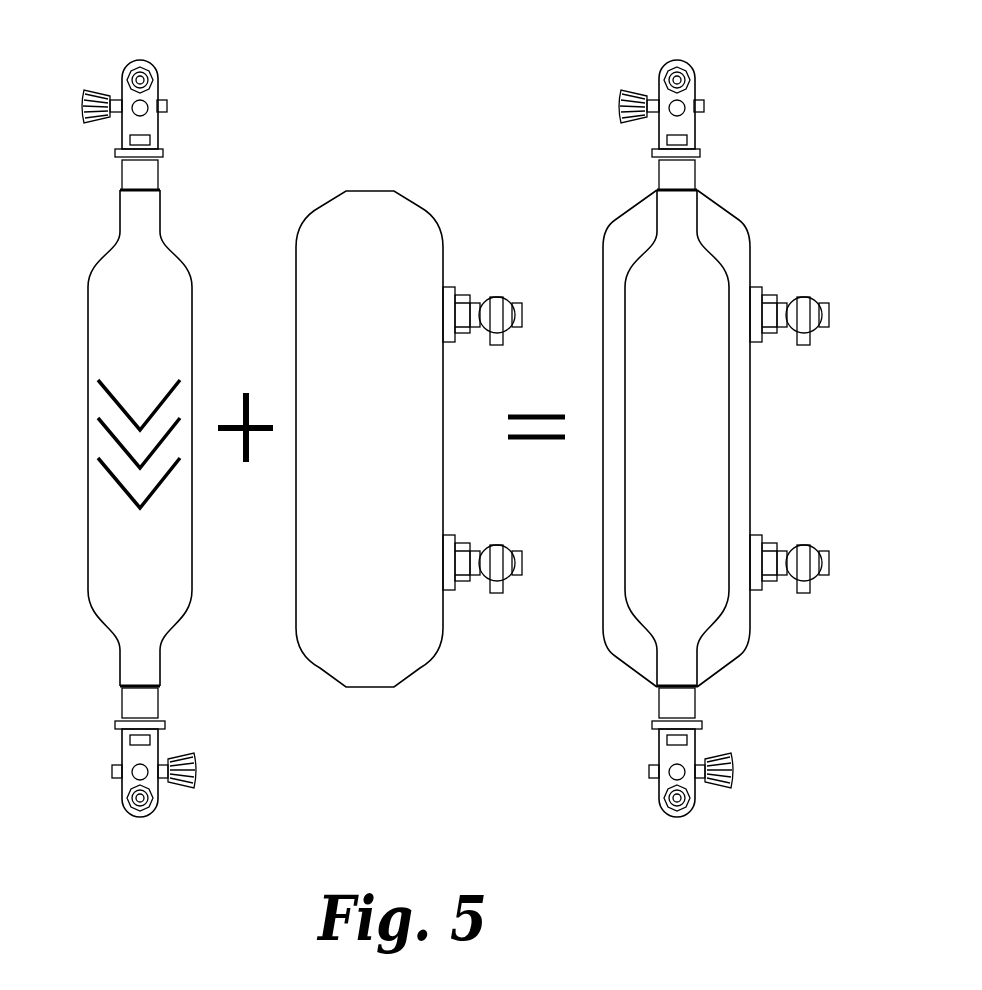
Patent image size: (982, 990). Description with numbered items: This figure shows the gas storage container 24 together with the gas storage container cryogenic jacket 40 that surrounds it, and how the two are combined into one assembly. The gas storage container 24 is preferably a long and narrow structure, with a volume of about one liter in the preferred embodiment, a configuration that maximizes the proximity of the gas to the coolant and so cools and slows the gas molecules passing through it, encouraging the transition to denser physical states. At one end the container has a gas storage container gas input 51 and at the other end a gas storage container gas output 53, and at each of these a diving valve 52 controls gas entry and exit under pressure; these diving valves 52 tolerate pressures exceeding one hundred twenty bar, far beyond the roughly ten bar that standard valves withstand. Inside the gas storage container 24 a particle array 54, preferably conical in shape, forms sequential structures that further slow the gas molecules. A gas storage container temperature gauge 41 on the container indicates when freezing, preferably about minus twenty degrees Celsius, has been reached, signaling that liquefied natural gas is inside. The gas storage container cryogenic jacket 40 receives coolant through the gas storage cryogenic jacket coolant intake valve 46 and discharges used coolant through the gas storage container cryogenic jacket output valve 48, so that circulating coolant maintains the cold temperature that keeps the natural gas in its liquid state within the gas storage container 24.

The gas storage container 24 is at (118, 563).
The gas storage container cryogenic jacket 40 is at (336, 233).
The gas storage container temperature gauge 41 is at (137, 773).
The gas storage cryogenic jacket coolant intake valve 46 is at (522, 563).
The gas storage container cryogenic jacket output valve 48 is at (522, 313).
The gas storage container gas input 51 is at (112, 770).
The diving valves 52 is at (146, 60).
The gas storage container gas output 53 is at (167, 105).
The particle array 54 is at (110, 435).